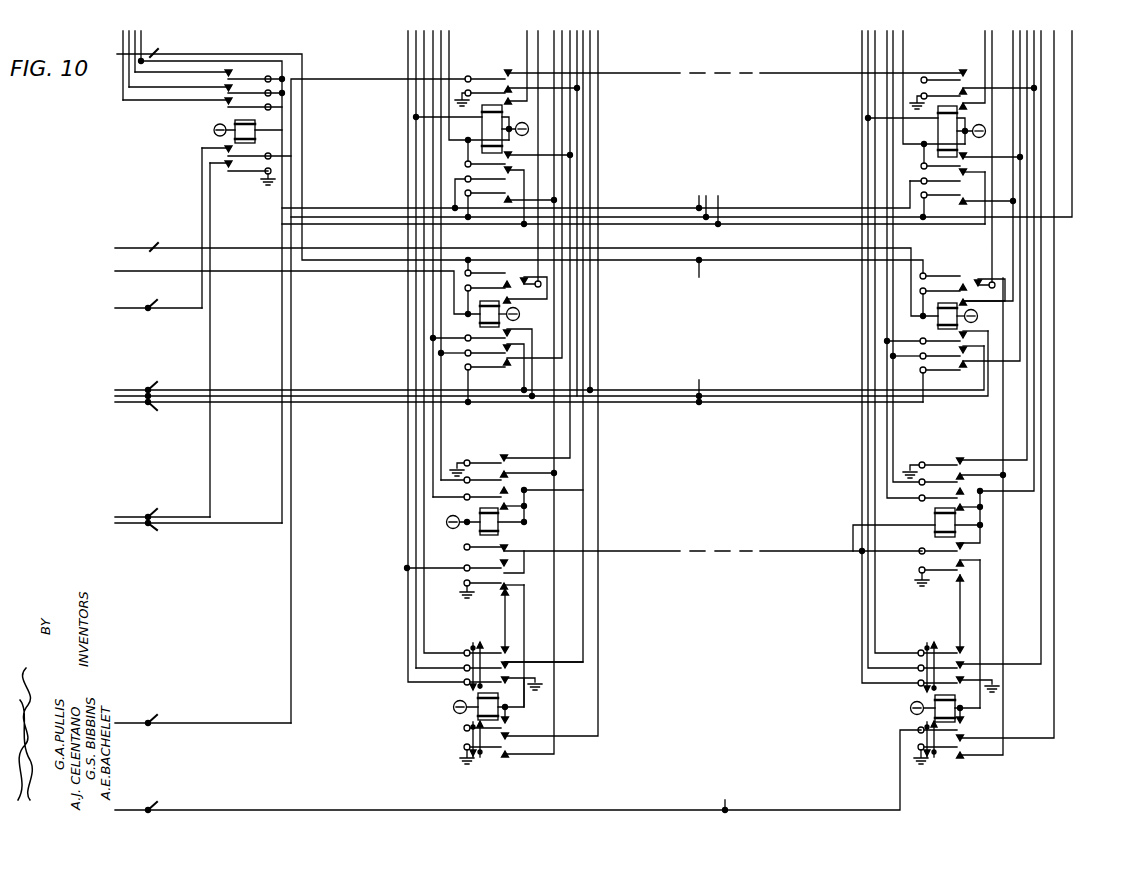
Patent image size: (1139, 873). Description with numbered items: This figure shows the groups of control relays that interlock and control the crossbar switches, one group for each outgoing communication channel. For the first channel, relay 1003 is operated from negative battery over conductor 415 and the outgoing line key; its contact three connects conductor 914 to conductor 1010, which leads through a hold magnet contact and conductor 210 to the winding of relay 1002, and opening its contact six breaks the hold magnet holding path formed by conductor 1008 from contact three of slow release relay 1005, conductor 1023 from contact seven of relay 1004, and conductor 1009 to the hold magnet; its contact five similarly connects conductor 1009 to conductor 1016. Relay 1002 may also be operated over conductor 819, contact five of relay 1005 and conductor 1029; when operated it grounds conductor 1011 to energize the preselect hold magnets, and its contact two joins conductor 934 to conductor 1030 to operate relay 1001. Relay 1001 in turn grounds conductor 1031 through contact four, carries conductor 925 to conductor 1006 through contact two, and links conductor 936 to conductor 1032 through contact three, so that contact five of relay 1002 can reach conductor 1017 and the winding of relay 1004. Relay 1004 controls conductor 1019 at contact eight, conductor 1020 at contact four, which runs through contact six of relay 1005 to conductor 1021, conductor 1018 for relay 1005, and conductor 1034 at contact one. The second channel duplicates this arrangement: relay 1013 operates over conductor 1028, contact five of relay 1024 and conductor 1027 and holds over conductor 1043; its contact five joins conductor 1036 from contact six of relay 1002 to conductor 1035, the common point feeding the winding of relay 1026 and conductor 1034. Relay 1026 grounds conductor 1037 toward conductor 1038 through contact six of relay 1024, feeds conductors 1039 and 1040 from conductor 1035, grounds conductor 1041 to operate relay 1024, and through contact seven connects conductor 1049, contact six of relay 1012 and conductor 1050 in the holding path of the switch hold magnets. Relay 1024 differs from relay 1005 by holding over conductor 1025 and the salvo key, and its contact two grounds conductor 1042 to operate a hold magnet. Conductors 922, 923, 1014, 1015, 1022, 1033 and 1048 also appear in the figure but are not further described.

The conductor 210 is at (449, 42).
The conductor 415 is at (128, 271).
The conductor 819 is at (590, 62).
The conductor 914 is at (186, 404).
The conductor 922 is at (131, 389).
The conductor 923 is at (181, 395).
The conductor 925 is at (228, 61).
The conductor 934 is at (128, 525).
The conductor 936 is at (130, 309).
The relay 1001 is at (234, 140).
The relay 1002 is at (482, 125).
The relay 1003 is at (480, 326).
The relay 1004 is at (480, 533).
The slow release relay 1005 is at (478, 700).
The conductor 1006 is at (136, 100).
The conductor 1008 is at (545, 697).
The conductor 1009 is at (538, 232).
The conductor 1010 is at (563, 347).
The conductor 1011 is at (527, 57).
The relay 1012 is at (938, 327).
The relay 1013 is at (938, 126).
The conductor 1014 is at (433, 62).
The conductor 1015 is at (433, 326).
The conductor 1016 is at (192, 49).
The conductor 1017 is at (565, 491).
The conductor 1018 is at (524, 595).
The conductor 1019 is at (577, 140).
The conductor 1020 is at (505, 626).
The conductor 1021 is at (424, 612).
The conductor 1022 is at (598, 42).
The conductor 1023 is at (554, 422).
The relay 1024 is at (935, 700).
The conductor 1025 is at (126, 810).
The relay 1026 is at (935, 516).
The conductor 1027 is at (868, 167).
The conductor 1028 is at (1041, 44).
The conductor 1029 is at (408, 613).
The conductor 1030 is at (344, 208).
The conductor 1031 is at (128, 517).
The conductor 1032 is at (352, 79).
The conductor 1033 is at (416, 106).
The conductor 1034 is at (642, 551).
The conductor 1035 is at (1020, 493).
The conductor 1036 is at (838, 73).
The conductor 1037 is at (960, 634).
The conductor 1038 is at (875, 613).
The conductor 1039 is at (893, 455).
The conductor 1040 is at (888, 44).
The conductor 1041 is at (980, 608).
The conductor 1042 is at (1025, 738).
The conductor 1043 is at (862, 44).
The conductor 1048 is at (172, 100).
The conductor 1049 is at (1003, 445).
The conductor 1050 is at (992, 249).